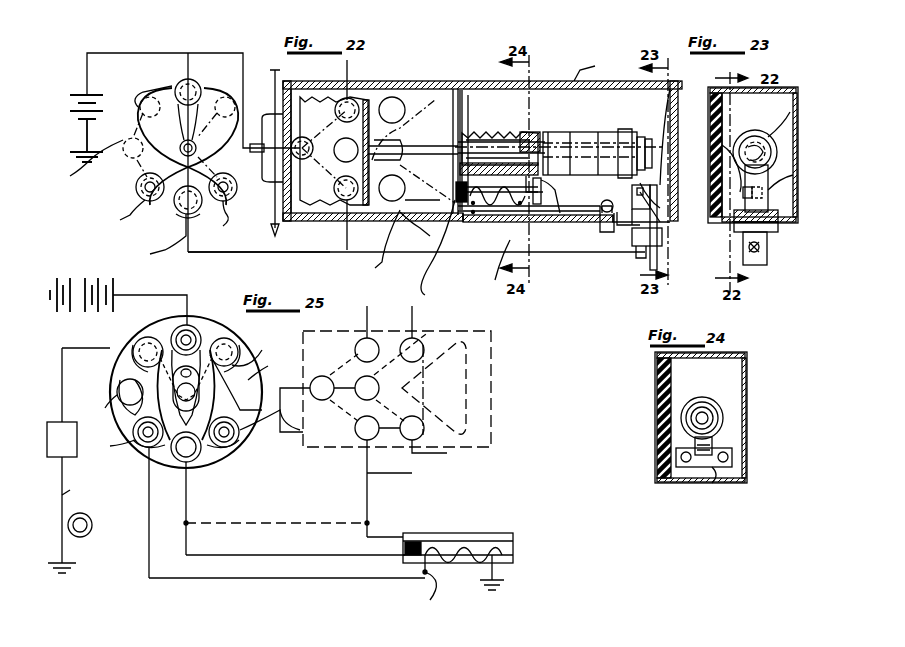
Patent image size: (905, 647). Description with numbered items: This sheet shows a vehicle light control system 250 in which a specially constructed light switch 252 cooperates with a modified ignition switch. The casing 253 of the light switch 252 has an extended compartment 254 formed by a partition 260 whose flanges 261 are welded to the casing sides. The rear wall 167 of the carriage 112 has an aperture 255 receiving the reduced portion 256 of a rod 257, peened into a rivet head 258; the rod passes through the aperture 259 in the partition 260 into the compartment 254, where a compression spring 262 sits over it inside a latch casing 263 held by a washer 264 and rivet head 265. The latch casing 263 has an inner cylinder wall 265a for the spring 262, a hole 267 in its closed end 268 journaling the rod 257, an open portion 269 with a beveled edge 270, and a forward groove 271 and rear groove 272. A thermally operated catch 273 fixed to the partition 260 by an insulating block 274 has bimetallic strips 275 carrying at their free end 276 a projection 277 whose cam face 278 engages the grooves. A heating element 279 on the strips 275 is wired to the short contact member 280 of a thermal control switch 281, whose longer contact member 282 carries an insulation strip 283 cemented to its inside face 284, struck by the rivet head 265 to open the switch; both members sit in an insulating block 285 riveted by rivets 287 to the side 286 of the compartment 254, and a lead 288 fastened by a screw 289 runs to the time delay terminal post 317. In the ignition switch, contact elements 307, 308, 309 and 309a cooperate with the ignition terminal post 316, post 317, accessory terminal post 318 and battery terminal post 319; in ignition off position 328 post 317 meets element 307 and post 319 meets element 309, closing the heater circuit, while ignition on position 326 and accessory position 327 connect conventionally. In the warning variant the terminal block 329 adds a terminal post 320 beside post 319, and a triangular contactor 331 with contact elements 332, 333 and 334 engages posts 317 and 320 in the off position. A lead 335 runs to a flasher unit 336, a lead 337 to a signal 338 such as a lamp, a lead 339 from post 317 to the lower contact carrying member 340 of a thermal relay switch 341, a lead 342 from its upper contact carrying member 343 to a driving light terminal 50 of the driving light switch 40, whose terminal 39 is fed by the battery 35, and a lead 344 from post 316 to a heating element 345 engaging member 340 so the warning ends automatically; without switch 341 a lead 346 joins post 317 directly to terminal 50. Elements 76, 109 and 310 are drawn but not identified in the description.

In FIG. 22, the battery 35 is at (78, 133).
In FIG. 22, the terminal 39 is at (310, 145).
In FIG. 25, the driving light switch 40 is at (491, 412).
In FIG. 22, the driving light terminal 50 is at (338, 195).
In FIG. 25, the driving light terminal 50 is at (358, 438).
In FIG. 22, the shaft 76 is at (330, 67).
In FIG. 22, the plate 109 is at (275, 100).
In FIG. 25, the plate 109 is at (466, 392).
In FIG. 22, the carriage 112 is at (295, 205).
In FIG. 22, the rear wall 167 is at (348, 202).
In FIG. 22, the vehicle light control system 250 is at (432, 65).
In FIG. 22, the light switch 252 is at (599, 67).
In FIG. 23, the light switch 252 is at (753, 155).
In FIG. 24, the light switch 252 is at (665, 483).
In FIG. 22, the casing 253 is at (424, 227).
In FIG. 22, the extended compartment 254 is at (657, 222).
In FIG. 22, the aperture 255 is at (420, 128).
In FIG. 22, the reduced portion 256 is at (420, 162).
In FIG. 22, the rod 257 is at (452, 90).
In FIG. 22, the rivet head 258 is at (300, 160).
In FIG. 22, the aperture 259 is at (468, 95).
In FIG. 22, the partition 260 is at (438, 251).
In FIG. 22, the flanges 261 is at (392, 242).
In FIG. 22, the compression spring 262 is at (530, 178).
In FIG. 24, the compression spring 262 is at (720, 390).
In FIG. 22, the latch casing 263 is at (512, 152).
In FIG. 23, the latch casing 263 is at (798, 116).
In FIG. 24, the latch casing 263 is at (715, 408).
In FIG. 22, the washer 264 is at (590, 175).
In FIG. 22, the rivet head 265 is at (640, 137).
In FIG. 23, the rivet head 265 is at (750, 140).
In FIG. 24, the inner cylinder wall 265a is at (712, 418).
In FIG. 22, the hole 267 is at (560, 137).
In FIG. 22, the closed end 268 is at (500, 200).
In FIG. 22, the open portion 269 is at (427, 184).
In FIG. 22, the beveled edge 270 is at (419, 199).
In FIG. 22, the forward groove 271 is at (500, 132).
In FIG. 22, the rear groove 272 is at (548, 132).
In FIG. 22, the thermally operated catch 273 is at (537, 204).
In FIG. 22, the insulating block 274 is at (462, 202).
In FIG. 24, the insulating block 274 is at (732, 462).
In FIG. 22, the bimetallic strips 275 is at (607, 232).
In FIG. 22, the free end 276 is at (540, 213).
In FIG. 24, the free end 276 is at (712, 483).
In FIG. 22, the projection 277 is at (570, 188).
In FIG. 24, the projection 277 is at (712, 445).
In FIG. 22, the cam face 278 is at (495, 267).
In FIG. 22, the heating element 279 is at (478, 138).
In FIG. 22, the short contact member 280 is at (660, 178).
In FIG. 23, the short contact member 280 is at (722, 145).
In FIG. 22, the thermal control switch 281 is at (670, 89).
In FIG. 22, the longer contact member 282 is at (650, 200).
In FIG. 23, the longer contact member 282 is at (756, 212).
In FIG. 22, the insulation strip 283 is at (648, 139).
In FIG. 22, the inside face 284 is at (650, 210).
In FIG. 22, the insulating block 285 is at (662, 238).
In FIG. 23, the insulating block 285 is at (800, 183).
In FIG. 23, the side 286 is at (778, 212).
In FIG. 23, the rivets 287 is at (767, 236).
In FIG. 24, the rivets 287 is at (732, 455).
In FIG. 22, the lead 288 is at (200, 252).
In FIG. 22, the screw 289 is at (636, 252).
In FIG. 23, the screw 289 is at (759, 250).
In FIG. 22, the contact element 307 is at (178, 205).
In FIG. 22, the contact element 308 is at (131, 158).
In FIG. 22, the contact element 309 is at (175, 96).
In FIG. 22, the contact element 309a is at (222, 98).
In FIG. 22, the contact 310 is at (235, 192).
In FIG. 22, the ignition terminal post 316 is at (138, 190).
In FIG. 25, the ignition terminal post 316 is at (111, 445).
In FIG. 22, the time delay terminal post 317 is at (152, 245).
In FIG. 25, the time delay terminal post 317 is at (200, 455).
In FIG. 22, the accessory terminal post 318 is at (240, 218).
In FIG. 25, the accessory terminal post 318 is at (240, 445).
In FIG. 22, the battery terminal post 319 is at (194, 82).
In FIG. 25, the battery terminal post 319 is at (194, 320).
In FIG. 25, the terminal post 320 is at (135, 345).
In FIG. 22, the ignition on position 326 is at (113, 215).
In FIG. 25, the ignition on position 326 is at (307, 406).
In FIG. 22, the accessory position 327 is at (80, 164).
In FIG. 25, the accessory position 327 is at (135, 428).
In FIG. 22, the ignition off position 328 is at (143, 95).
In FIG. 25, the ignition off position 328 is at (150, 500).
In FIG. 25, the terminal block 329 is at (117, 388).
In FIG. 25, the contactor 331 is at (263, 351).
In FIG. 25, the contact element 332 is at (190, 475).
In FIG. 25, the contact element 333 is at (93, 404).
In FIG. 25, the contact element 334 is at (236, 345).
In FIG. 25, the lead 335 is at (62, 348).
In FIG. 25, the flasher unit 336 is at (77, 450).
In FIG. 25, the lead 337 is at (82, 491).
In FIG. 25, the signal 338 is at (92, 525).
In FIG. 25, the lead 339 is at (255, 555).
In FIG. 25, the lower contact carrying member 340 is at (513, 548).
In FIG. 25, the thermal relay switch 341 is at (510, 528).
In FIG. 25, the lead 342 is at (367, 500).
In FIG. 25, the upper contact carrying member 343 is at (440, 541).
In FIG. 25, the lead 344 is at (230, 578).
In FIG. 25, the heating element 345 is at (444, 591).
In FIG. 25, the lead 346 is at (305, 530).